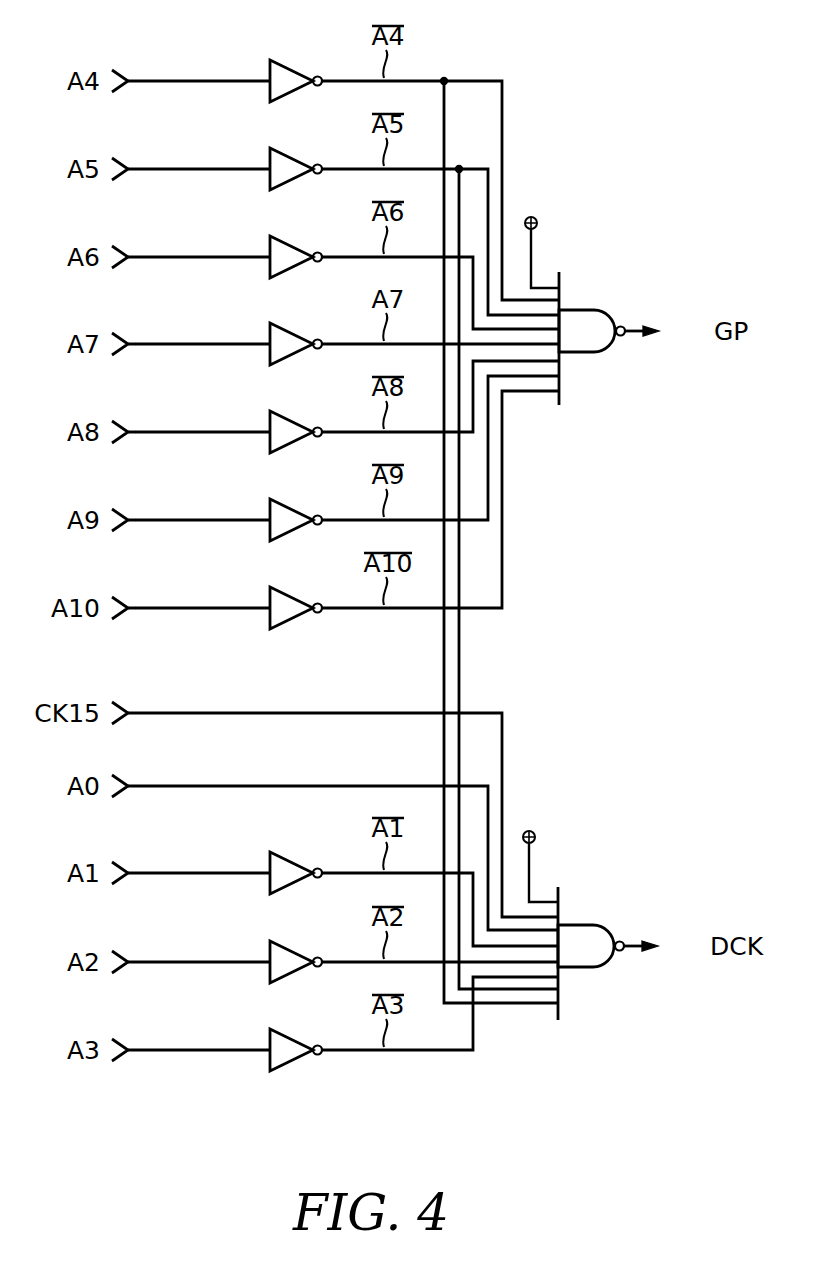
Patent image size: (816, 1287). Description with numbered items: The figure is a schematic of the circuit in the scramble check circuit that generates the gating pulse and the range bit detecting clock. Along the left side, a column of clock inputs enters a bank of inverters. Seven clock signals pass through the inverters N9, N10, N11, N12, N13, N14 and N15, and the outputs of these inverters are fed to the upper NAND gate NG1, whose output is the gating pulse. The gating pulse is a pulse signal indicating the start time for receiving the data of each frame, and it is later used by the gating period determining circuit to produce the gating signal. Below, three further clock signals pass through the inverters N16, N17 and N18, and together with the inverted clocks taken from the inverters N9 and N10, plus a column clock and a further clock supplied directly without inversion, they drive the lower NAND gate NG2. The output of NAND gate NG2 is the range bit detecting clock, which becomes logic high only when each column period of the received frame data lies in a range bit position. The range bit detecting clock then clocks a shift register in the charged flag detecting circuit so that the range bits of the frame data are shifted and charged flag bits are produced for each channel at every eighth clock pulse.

The inverter N9 is at (287, 65).
The inverter N10 is at (287, 153).
The inverter N11 is at (287, 241).
The inverter N12 is at (287, 328).
The inverter N13 is at (287, 416).
The inverter N14 is at (287, 504).
The inverter N15 is at (287, 592).
The inverter N16 is at (287, 857).
The inverter N17 is at (287, 946).
The inverter N18 is at (287, 1034).
The NAND gate NG1 is at (585, 308).
The NAND gate NG2 is at (585, 922).